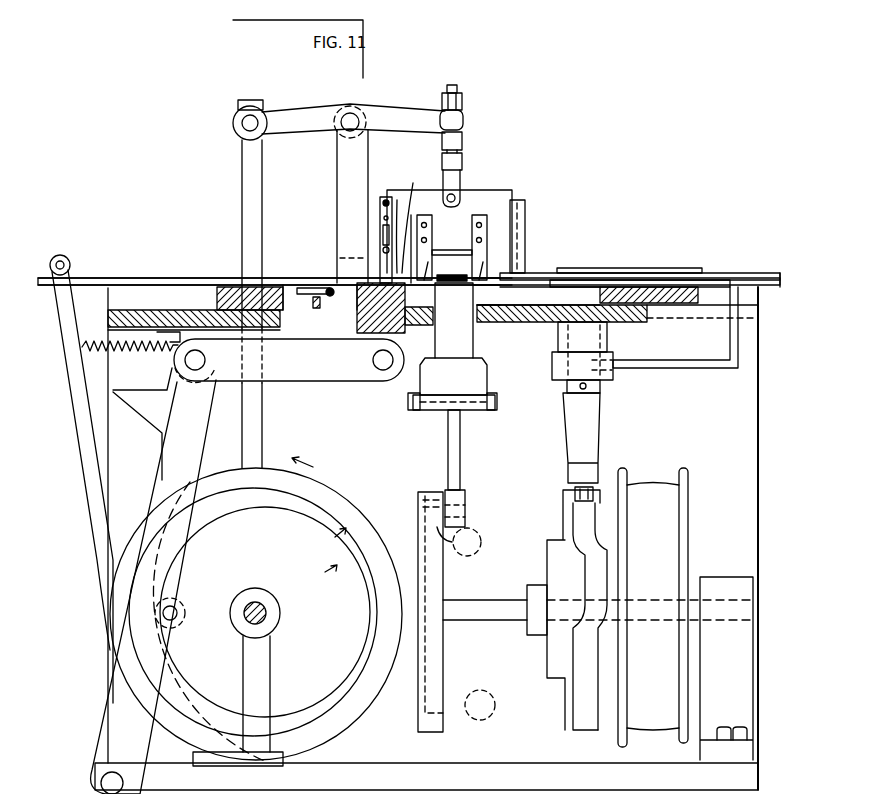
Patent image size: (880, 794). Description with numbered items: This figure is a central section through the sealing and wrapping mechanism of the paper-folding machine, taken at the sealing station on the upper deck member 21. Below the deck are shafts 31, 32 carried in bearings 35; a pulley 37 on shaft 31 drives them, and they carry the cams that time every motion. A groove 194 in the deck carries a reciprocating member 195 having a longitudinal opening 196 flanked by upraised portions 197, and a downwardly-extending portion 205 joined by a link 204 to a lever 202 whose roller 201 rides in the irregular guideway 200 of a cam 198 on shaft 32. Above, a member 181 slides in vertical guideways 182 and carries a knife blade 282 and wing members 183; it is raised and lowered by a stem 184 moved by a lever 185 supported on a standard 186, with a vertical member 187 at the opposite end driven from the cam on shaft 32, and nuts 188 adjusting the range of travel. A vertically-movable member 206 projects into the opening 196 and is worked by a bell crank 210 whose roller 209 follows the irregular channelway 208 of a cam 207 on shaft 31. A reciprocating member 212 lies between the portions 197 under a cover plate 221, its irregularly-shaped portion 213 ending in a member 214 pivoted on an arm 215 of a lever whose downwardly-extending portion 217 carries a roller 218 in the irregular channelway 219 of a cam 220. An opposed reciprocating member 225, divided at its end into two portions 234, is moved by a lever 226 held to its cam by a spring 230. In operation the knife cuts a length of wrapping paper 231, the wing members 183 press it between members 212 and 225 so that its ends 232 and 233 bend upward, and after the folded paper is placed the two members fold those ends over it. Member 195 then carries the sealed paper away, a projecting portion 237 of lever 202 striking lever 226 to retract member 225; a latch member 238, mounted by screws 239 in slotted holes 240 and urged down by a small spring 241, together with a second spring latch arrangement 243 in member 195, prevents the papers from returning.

The lever 185 is at (387, 107).
The nuts 188 is at (463, 101).
The stem 184 is at (460, 150).
The vertical member 187 is at (255, 165).
The vertical guideways 182 is at (524, 207).
The standard 186 is at (368, 160).
The slotted holes 240 is at (411, 183).
The small spring 241 is at (396, 205).
The slidable member 181 is at (494, 189).
The screws 239 is at (380, 220).
The latch member 238 is at (382, 237).
The portions of reciprocating member 234 is at (404, 275).
The knife blade 282 is at (437, 247).
The end of wrapping paper 232 is at (492, 276).
The wing members 183 is at (472, 268).
The upraised portions 197 is at (540, 271).
The cover plate 221 is at (625, 267).
The reciprocating member 212 is at (722, 270).
The groove 194 is at (112, 300).
The reciprocating member 195 is at (213, 297).
The reciprocating member 225 is at (222, 286).
The longitudinal opening 196 is at (538, 294).
The lever 226 is at (63, 322).
The spring 230 is at (120, 352).
The second spring latch arrangement 243 is at (293, 305).
The downwardly-extending portion 205 is at (362, 330).
The end of wrapping paper 233 is at (403, 290).
The wrapping paper 231 is at (452, 286).
The vertically-movable member 206 is at (470, 343).
The upper deck member 21 is at (633, 322).
The arm 215 is at (562, 342).
The member 214 is at (603, 384).
The irregularly-shaped portion 213 is at (707, 362).
The link 204 is at (297, 382).
The projecting portion 237 is at (138, 420).
The lever 202 is at (206, 445).
The bell crank 210 is at (455, 458).
The downwardly-extending portion 217 is at (599, 461).
The cam 198 is at (346, 484).
The roller 218 is at (577, 491).
The pulley 37 is at (684, 497).
The irregular guideway 200 is at (265, 605).
The irregular channelway 219 is at (572, 527).
The cam 220 is at (612, 532).
The roller 209 is at (460, 541).
The bearings 35 is at (730, 578).
The roller 201 is at (174, 600).
The shaft 31 is at (489, 598).
The shaft 32 is at (268, 617).
The cam 207 is at (445, 677).
The irregular channelway 208 is at (443, 705).